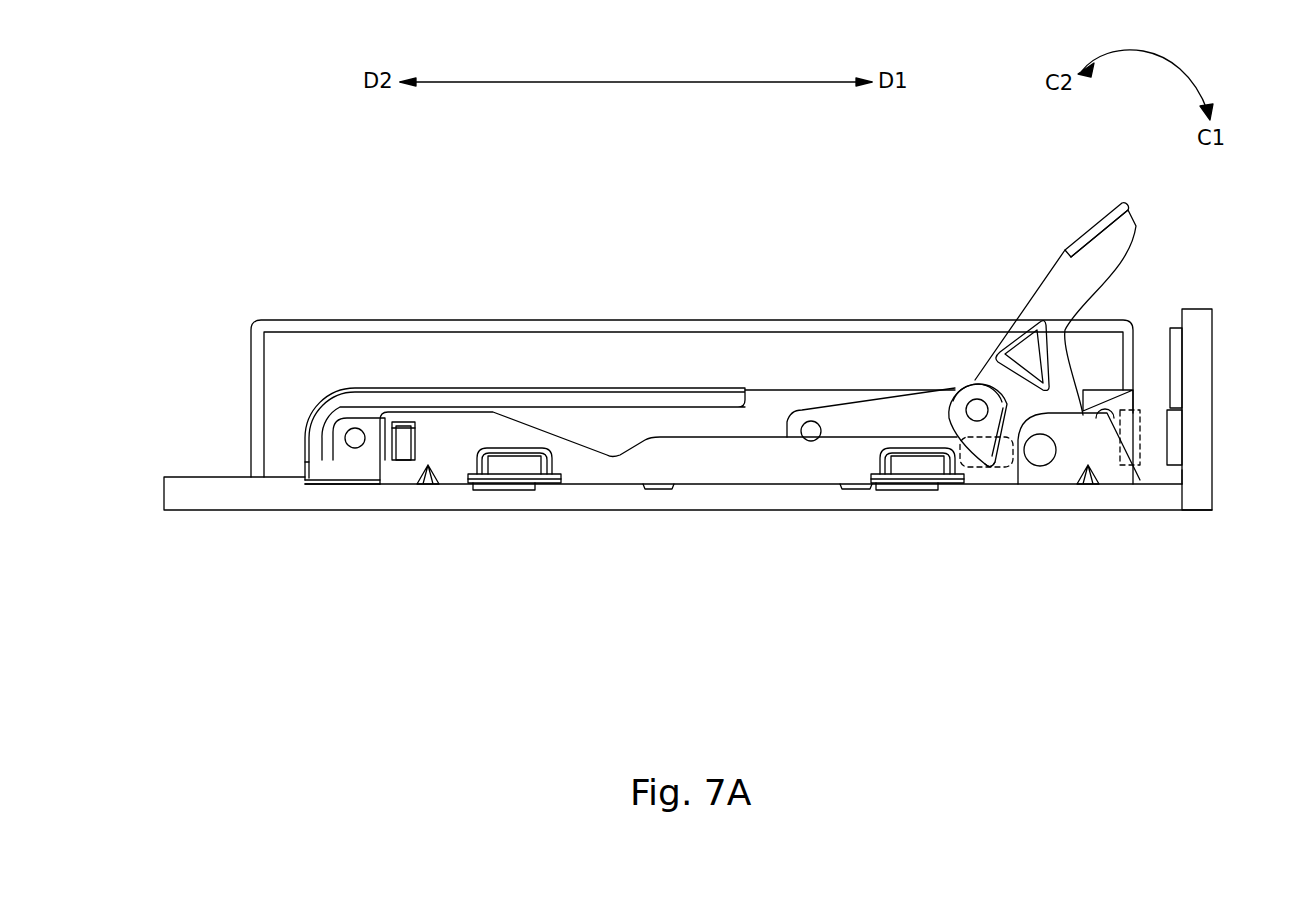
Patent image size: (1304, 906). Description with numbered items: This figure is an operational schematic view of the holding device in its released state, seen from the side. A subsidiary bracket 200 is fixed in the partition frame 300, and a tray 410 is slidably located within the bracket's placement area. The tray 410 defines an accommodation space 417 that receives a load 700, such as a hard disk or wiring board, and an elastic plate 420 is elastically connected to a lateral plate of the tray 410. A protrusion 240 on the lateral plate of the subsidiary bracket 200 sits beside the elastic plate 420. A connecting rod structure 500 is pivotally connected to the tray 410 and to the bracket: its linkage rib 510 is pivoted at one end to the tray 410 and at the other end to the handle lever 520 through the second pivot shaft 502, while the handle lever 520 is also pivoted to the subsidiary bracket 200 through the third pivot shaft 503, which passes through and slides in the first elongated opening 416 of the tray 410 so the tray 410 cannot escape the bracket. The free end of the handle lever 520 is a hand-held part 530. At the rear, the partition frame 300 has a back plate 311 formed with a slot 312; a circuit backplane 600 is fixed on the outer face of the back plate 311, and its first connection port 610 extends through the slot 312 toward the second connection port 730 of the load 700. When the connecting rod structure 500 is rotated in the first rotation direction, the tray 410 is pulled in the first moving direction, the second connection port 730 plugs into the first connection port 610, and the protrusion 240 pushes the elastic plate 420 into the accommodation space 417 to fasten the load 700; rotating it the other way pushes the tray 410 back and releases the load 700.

The subsidiary bracket 200 is at (693, 457).
The protrusion 240 is at (403, 450).
The partition frame 300 is at (1197, 495).
The back plate 311 is at (1176, 362).
The slot 312 is at (1192, 477).
The tray 410 is at (328, 492).
The first elongated opening 416 is at (975, 480).
The accommodation space 417 is at (363, 378).
The elastic plate 420 is at (355, 446).
The connecting rod structure 500 is at (1088, 289).
The second pivot shaft 502 is at (977, 408).
The third pivot shaft 503 is at (1040, 452).
The linkage rib 510 is at (858, 420).
The handle lever 520 is at (1020, 408).
The hand-held part 530 is at (1128, 220).
The circuit backplane 600 is at (1197, 308).
The first connection port 610 is at (1176, 437).
The load 700 is at (612, 352).
The second connection port 730 is at (1128, 455).